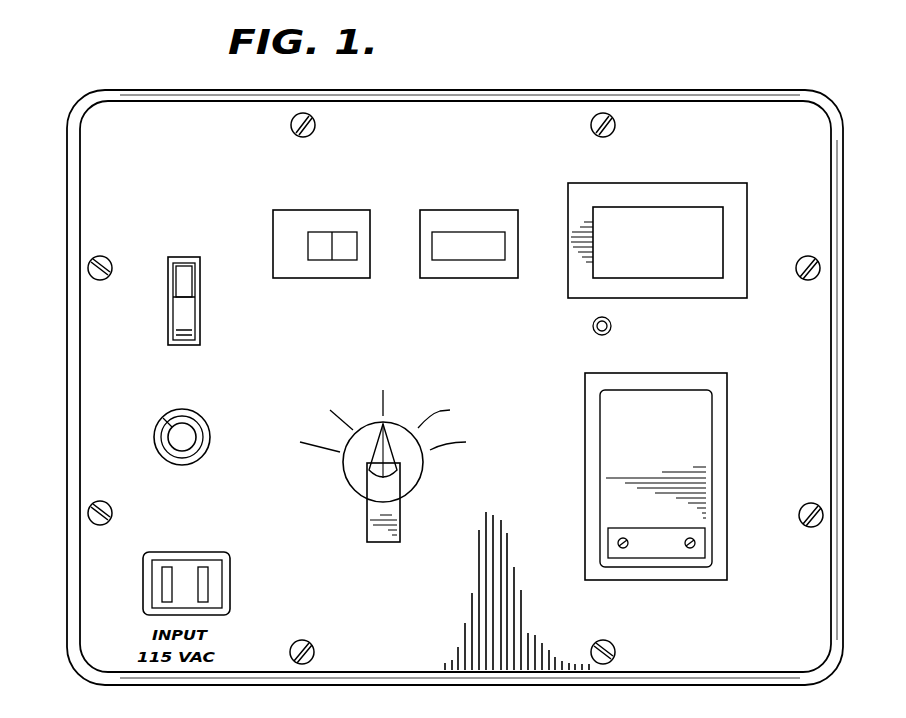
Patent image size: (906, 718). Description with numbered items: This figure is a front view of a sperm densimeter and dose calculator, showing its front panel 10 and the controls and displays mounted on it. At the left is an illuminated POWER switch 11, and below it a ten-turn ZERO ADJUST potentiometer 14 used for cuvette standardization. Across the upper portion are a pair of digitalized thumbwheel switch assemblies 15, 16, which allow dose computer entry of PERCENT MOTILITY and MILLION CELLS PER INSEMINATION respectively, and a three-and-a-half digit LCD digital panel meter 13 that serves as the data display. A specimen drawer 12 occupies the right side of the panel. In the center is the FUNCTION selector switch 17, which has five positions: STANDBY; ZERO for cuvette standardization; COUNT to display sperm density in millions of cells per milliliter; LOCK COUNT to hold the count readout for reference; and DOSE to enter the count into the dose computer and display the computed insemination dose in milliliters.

The front panel 10 is at (540, 103).
The POWER switch 11 is at (182, 291).
The specimen drawer 12 is at (690, 440).
The digital panel meter 13 is at (713, 228).
The ZERO ADJUST potentiometer 14 is at (160, 438).
The thumbwheel switch assembly 15 is at (310, 218).
The thumbwheel switch assembly 16 is at (472, 218).
The FUNCTION selector switch 17 is at (410, 467).